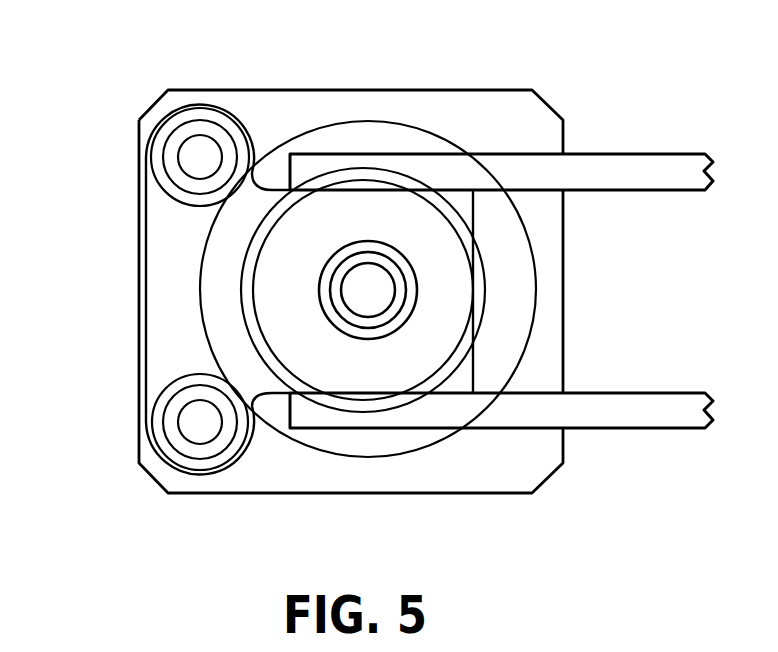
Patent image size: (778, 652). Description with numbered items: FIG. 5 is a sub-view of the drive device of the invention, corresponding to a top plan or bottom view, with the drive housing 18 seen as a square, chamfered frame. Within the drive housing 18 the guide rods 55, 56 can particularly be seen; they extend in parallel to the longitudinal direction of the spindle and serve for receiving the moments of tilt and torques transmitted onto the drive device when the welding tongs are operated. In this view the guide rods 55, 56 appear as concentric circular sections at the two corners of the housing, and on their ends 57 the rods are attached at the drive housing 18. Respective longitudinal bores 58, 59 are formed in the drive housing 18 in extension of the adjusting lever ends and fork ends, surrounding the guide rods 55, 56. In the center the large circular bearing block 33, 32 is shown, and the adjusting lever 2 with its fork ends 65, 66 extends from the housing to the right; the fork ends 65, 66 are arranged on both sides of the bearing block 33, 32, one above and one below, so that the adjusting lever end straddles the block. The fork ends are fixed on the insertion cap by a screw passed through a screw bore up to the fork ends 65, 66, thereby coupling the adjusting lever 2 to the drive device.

The drive housing 18 is at (130, 268).
The guide rod 55 is at (186, 107).
The ends of the guide rods 57 is at (188, 152).
The longitudinal bore 58 is at (224, 125).
The guide rod 56 is at (193, 430).
The longitudinal bore 59 is at (229, 457).
The bearing block 33 is at (368, 343).
The bearing block 32 is at (403, 353).
The adjusting lever 2 is at (501, 292).
The fork end 66 is at (655, 168).
The fork end 65 is at (648, 413).